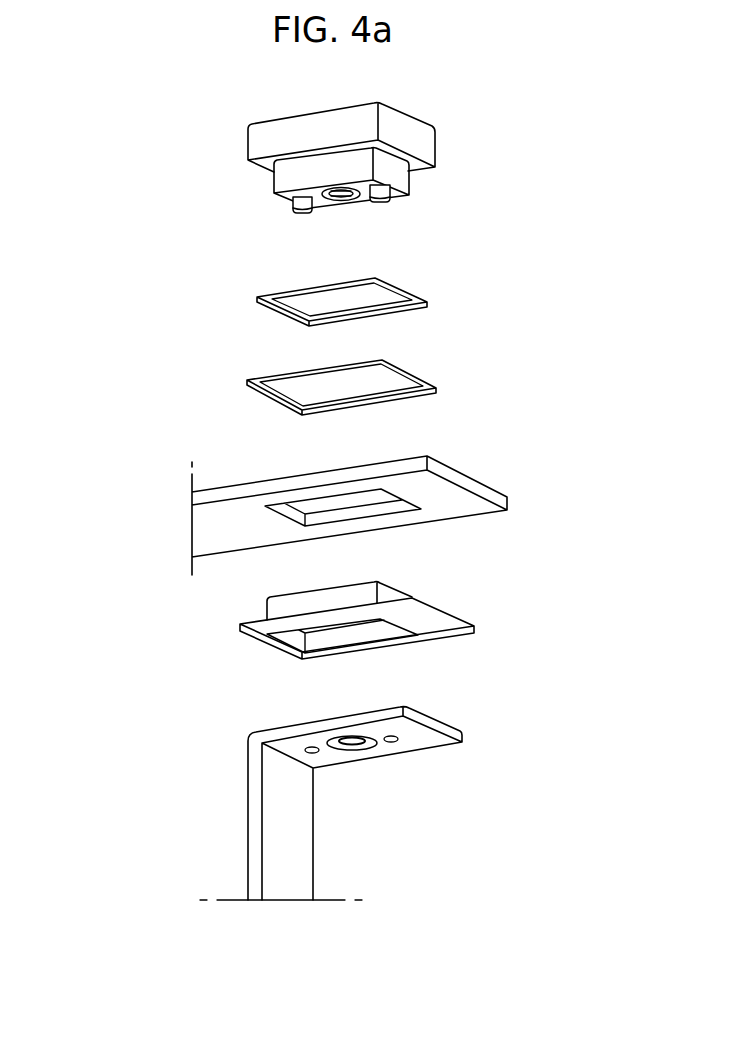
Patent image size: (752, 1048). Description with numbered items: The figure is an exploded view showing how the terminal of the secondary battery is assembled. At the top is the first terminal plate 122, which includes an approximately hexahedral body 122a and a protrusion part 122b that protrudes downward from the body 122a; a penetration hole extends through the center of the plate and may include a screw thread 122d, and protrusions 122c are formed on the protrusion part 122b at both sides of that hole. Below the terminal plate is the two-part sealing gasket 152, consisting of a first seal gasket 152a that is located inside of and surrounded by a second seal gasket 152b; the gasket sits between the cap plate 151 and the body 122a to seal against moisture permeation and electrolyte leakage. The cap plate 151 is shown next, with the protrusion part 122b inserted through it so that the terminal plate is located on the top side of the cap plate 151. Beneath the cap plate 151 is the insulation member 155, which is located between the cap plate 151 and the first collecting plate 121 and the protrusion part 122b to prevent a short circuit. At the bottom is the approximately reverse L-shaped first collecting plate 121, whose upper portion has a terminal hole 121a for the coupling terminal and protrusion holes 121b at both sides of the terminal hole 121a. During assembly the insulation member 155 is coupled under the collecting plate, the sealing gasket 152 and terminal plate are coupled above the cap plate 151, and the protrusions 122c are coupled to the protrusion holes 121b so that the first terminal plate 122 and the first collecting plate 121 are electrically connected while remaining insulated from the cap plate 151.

The first terminal plate 122 is at (125, 104).
The body 122a is at (265, 132).
The protrusion part 122b is at (284, 181).
The protrusions 122c is at (298, 212).
The screw thread 122d is at (345, 201).
The sealing gasket 152 is at (125, 288).
The first seal gasket 152a is at (257, 300).
The second seal gasket 152b is at (247, 384).
The cap plate 151 is at (507, 498).
The insulation member 155 is at (440, 633).
The first collecting plate 121 is at (257, 796).
The terminal hole 121a is at (350, 744).
The protrusion holes 121b is at (396, 749).